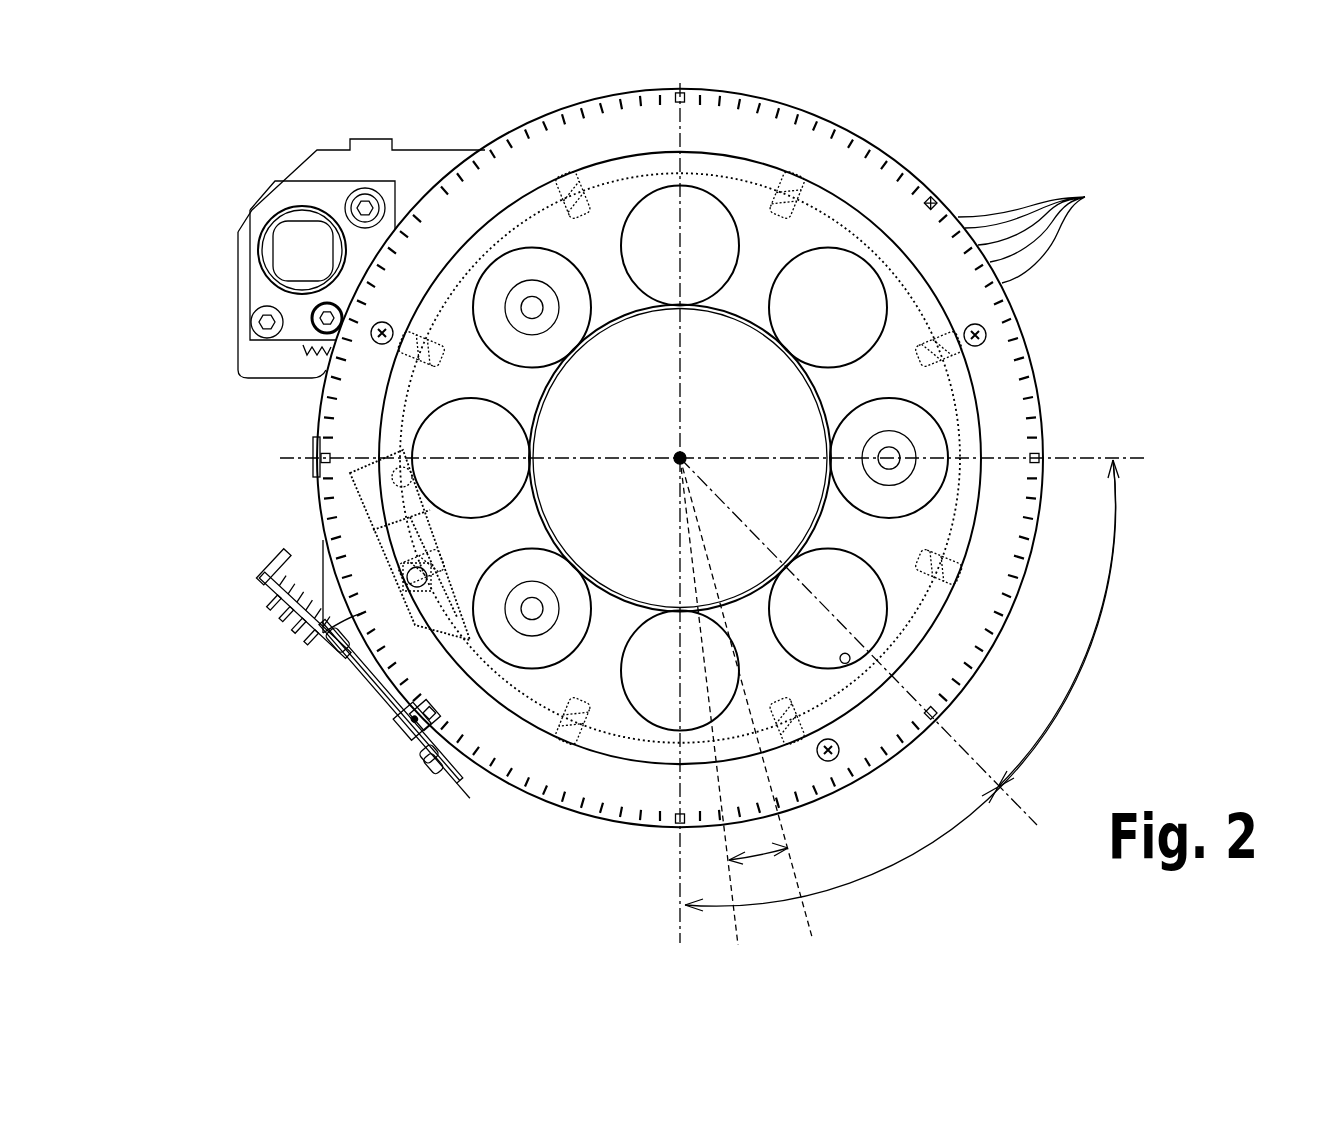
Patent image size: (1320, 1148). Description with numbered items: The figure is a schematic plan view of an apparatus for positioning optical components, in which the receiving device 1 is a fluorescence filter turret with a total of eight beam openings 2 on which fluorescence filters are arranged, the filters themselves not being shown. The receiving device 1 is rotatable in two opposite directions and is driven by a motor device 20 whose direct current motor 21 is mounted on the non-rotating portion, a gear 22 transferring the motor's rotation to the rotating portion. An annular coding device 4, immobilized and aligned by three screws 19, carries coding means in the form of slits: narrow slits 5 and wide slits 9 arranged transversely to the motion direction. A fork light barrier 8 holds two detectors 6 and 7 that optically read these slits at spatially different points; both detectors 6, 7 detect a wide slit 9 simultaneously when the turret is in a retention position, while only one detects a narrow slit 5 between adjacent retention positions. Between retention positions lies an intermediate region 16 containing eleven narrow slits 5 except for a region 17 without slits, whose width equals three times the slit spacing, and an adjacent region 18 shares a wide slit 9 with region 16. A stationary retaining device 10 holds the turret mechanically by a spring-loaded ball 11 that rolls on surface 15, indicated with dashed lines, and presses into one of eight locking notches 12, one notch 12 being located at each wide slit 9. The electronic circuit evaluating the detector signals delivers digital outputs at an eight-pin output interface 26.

The receiving device 1 is at (212, 466).
The beam openings 2 is at (693, 205).
The coding device 4 is at (810, 150).
The coding means 5 is at (1036, 228).
The detector 6 is at (412, 740).
The detector 7 is at (432, 752).
The fork light barrier 8 is at (415, 712).
The coding means 9 is at (932, 203).
The retaining device 10 is at (350, 475).
The ball 11 is at (322, 632).
The locking notches 12 is at (800, 185).
The surface 15 is at (513, 215).
The intermediate region 16 is at (930, 843).
The region without coding means 17 is at (762, 862).
The region 18 is at (1090, 643).
The screws 19 is at (978, 335).
The motor device 20 is at (305, 186).
The motor 21 is at (303, 225).
The gear 22 is at (303, 352).
The output interface 26 is at (258, 597).